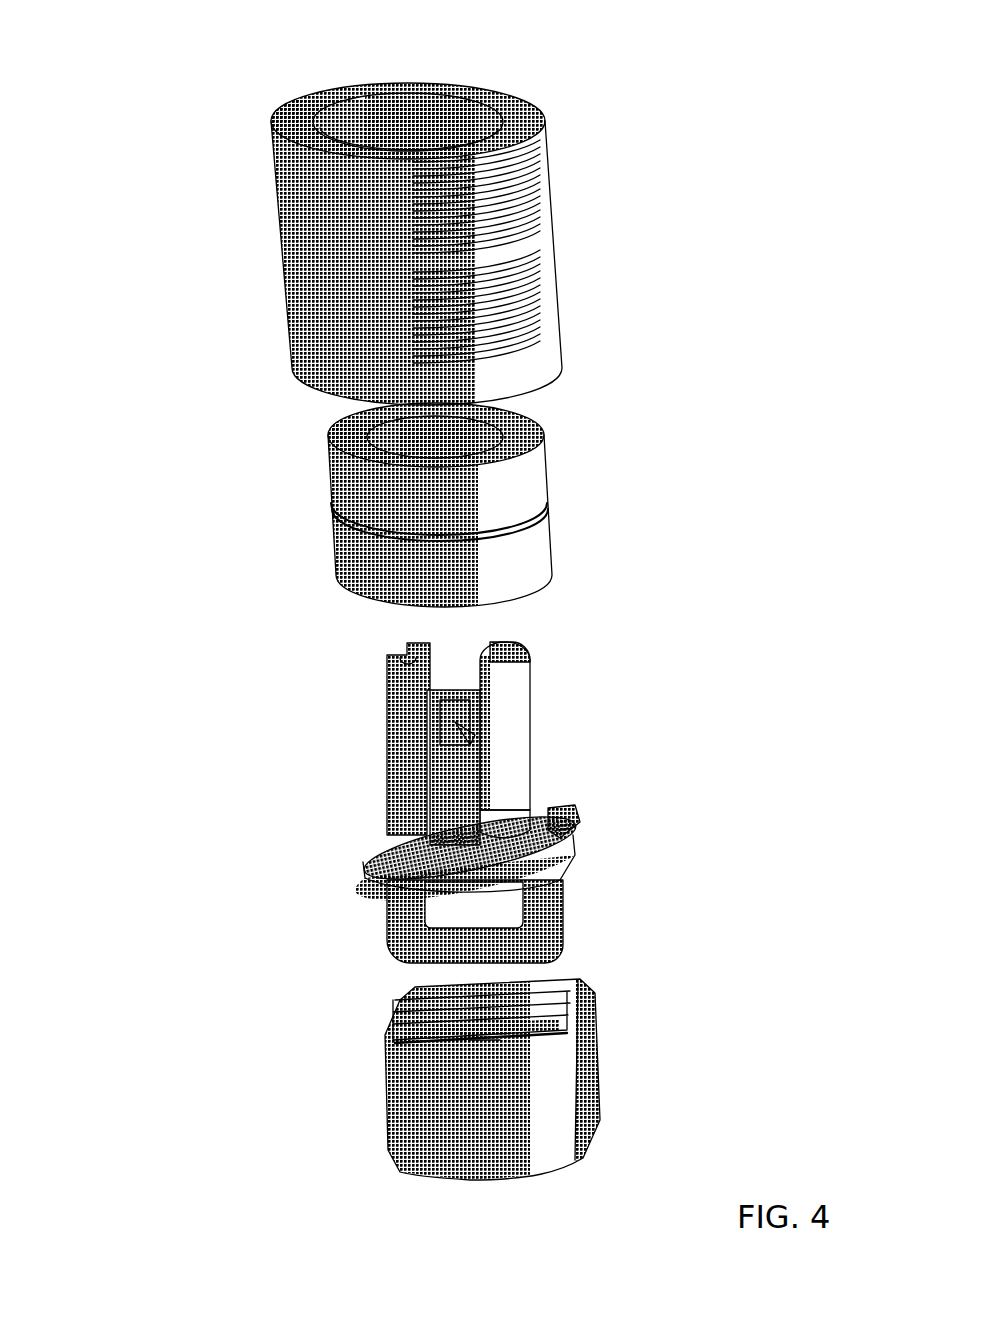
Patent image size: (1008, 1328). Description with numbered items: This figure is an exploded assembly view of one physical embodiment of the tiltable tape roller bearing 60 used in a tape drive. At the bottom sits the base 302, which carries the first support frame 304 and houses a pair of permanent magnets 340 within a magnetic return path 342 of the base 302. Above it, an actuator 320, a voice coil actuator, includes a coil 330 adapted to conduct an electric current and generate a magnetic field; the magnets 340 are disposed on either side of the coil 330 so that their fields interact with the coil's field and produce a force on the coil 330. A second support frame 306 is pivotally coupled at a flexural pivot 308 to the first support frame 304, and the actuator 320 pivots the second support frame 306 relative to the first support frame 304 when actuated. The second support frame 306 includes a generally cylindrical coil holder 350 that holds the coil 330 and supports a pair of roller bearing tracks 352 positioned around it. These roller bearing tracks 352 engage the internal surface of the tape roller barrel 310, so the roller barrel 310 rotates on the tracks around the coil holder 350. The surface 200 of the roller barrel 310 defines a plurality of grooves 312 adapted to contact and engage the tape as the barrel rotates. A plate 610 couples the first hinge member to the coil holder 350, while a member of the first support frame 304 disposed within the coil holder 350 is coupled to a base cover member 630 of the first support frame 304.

The tape roller bearing 60 is at (193, 73).
The surface of the roller barrel 200 is at (492, 246).
The tape roller barrel 310 is at (556, 152).
The grooves 312 is at (540, 207).
The roller bearing tracks 352 is at (548, 462).
The coil holder 350 is at (497, 756).
The plate 610 is at (462, 700).
The second support frame 306 is at (530, 700).
The pivot 308 is at (397, 745).
The first support frame 304 is at (530, 806).
The base cover member 630 is at (570, 826).
The coil 330 is at (580, 882).
The actuator 320 is at (490, 1049).
The permanent magnets 340 is at (595, 1008).
The magnetic return path 342 is at (473, 1043).
The base 302 is at (369, 1112).